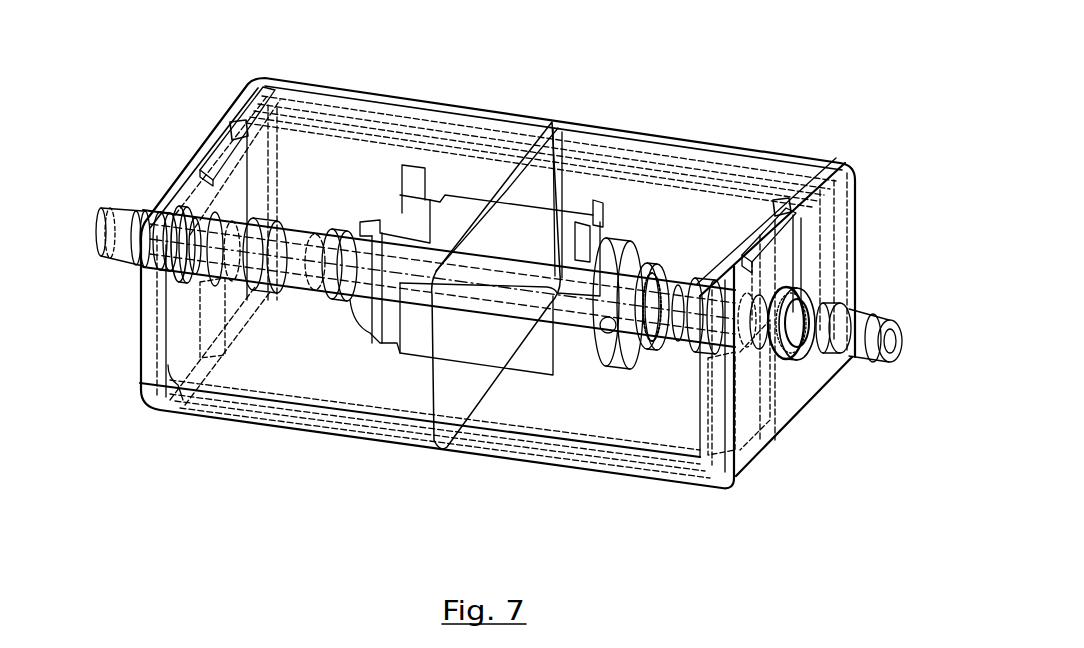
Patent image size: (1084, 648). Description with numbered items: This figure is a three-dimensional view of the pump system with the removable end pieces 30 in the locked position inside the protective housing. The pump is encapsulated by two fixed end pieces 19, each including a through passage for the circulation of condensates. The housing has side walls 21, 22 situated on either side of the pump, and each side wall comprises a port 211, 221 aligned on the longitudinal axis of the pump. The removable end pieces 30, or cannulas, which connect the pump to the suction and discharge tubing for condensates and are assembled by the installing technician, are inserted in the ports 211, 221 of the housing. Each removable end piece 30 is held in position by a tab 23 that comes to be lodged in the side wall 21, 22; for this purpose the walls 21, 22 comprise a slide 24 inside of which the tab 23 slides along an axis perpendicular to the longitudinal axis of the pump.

The fixed end piece 19 is at (641, 235).
The side wall 21 is at (730, 447).
The side wall 22 is at (142, 377).
The tab 23 is at (237, 128).
The slide 24 is at (793, 262).
The removable end piece 30 is at (120, 227).
The port 211 is at (805, 300).
The port 221 is at (177, 217).